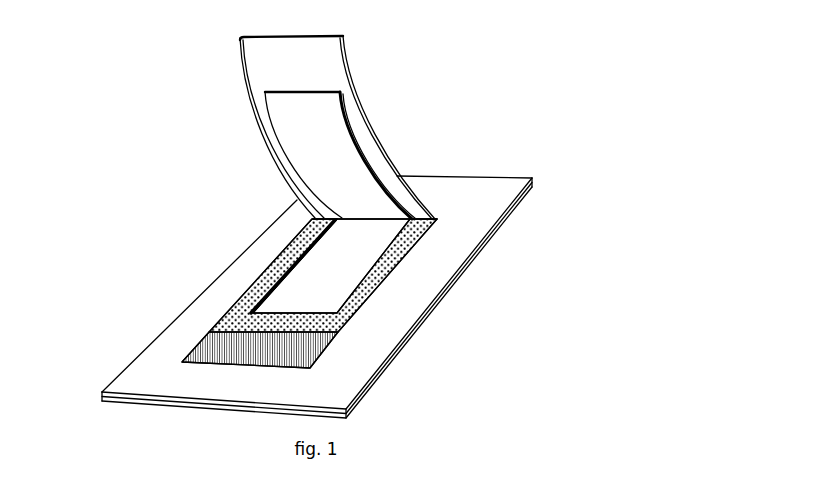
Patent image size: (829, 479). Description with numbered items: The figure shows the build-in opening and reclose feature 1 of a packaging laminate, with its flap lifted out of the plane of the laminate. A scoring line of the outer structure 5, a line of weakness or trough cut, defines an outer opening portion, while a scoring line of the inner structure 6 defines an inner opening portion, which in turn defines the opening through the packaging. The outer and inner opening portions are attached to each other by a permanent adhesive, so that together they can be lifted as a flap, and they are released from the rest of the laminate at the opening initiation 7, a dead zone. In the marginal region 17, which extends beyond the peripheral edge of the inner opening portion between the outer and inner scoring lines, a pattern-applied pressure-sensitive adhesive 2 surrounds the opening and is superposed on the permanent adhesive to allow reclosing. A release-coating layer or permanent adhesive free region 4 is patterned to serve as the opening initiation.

The build-in opening and reclose feature 1 is at (96, 149).
The pattern-applied pressure-sensitive adhesive 2 is at (352, 304).
The release-coating layer or permanent adhesive free region 4 is at (218, 342).
The scoring line of the outer structure 5 is at (355, 83).
The scoring line of the inner structure 6 is at (345, 125).
The opening initiation 7 is at (255, 69).
The marginal region 17 is at (369, 164).